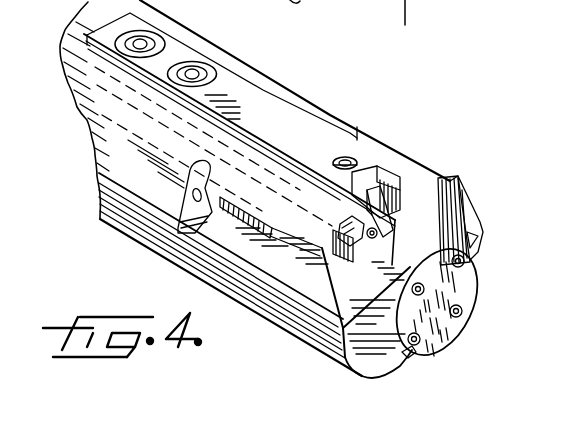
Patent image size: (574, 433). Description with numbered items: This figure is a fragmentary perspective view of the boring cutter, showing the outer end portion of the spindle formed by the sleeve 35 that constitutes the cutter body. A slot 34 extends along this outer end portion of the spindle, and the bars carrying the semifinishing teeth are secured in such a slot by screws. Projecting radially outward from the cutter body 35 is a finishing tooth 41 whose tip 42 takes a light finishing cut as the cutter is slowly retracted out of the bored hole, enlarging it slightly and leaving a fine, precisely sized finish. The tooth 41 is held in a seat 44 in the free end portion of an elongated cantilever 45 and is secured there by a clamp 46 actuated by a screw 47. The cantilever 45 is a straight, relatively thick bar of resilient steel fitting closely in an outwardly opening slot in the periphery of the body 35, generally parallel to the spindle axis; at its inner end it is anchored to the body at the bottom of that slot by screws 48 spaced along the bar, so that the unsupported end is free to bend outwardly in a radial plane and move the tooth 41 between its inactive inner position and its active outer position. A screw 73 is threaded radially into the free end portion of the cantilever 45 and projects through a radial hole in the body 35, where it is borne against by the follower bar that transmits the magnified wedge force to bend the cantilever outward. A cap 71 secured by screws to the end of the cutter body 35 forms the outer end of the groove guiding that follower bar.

The slot 34 is at (470, 225).
The sleeve 35 is at (110, 150).
The tooth 41 is at (426, 200).
The tip 42 is at (400, 182).
The seat 44 is at (356, 195).
The cantilever 45 is at (265, 108).
The clamp 46 is at (348, 209).
The screw 47 is at (352, 232).
The screws 48 is at (193, 62).
The cap 71 is at (465, 286).
The screw 73 is at (352, 158).